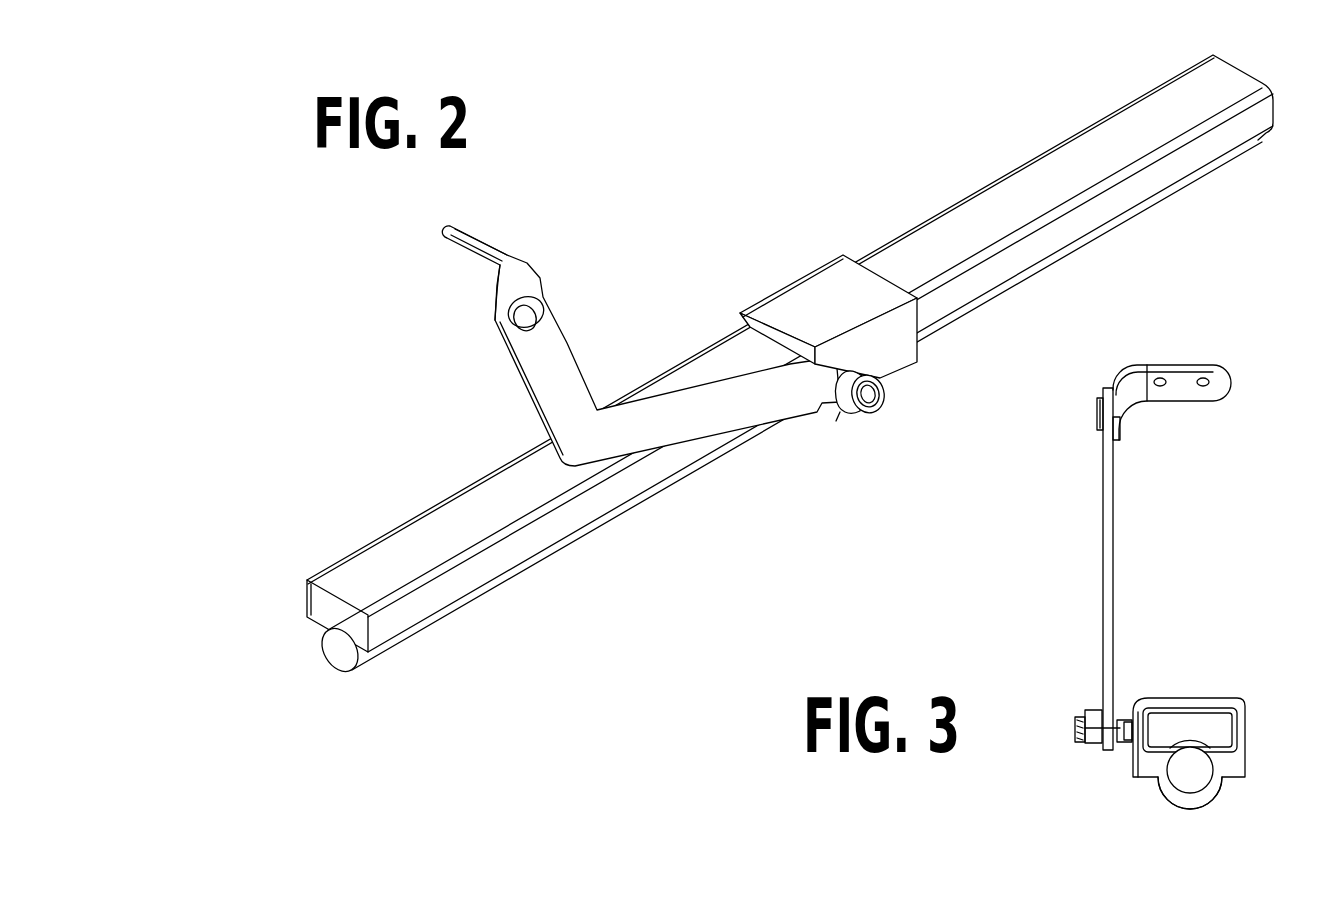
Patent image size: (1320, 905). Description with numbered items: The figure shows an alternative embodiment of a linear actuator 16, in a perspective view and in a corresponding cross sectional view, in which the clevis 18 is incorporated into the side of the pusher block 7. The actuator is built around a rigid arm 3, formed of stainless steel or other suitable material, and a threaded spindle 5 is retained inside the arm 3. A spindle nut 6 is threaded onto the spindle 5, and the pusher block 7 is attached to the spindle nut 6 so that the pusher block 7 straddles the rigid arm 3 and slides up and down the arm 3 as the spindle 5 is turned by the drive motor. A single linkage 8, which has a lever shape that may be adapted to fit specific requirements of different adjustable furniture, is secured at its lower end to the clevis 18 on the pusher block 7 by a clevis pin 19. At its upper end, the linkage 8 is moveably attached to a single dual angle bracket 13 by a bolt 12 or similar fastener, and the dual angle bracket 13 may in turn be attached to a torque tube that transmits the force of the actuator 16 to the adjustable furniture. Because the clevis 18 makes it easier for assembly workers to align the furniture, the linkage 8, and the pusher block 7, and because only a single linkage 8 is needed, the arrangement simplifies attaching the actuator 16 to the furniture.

In FIG. 2, the rigid arm 3 is at (1003, 208).
In FIG. 3, the rigid arm 3 is at (1220, 723).
In FIG. 2, the threaded spindle 5 is at (330, 660).
In FIG. 3, the threaded spindle 5 is at (1182, 782).
In FIG. 3, the spindle nut 6 is at (1216, 782).
In FIG. 2, the pusher block 7 is at (903, 337).
In FIG. 3, the pusher block 7 is at (1190, 700).
In FIG. 2, the linkage 8 is at (557, 355).
In FIG. 3, the linkage 8 is at (1110, 534).
In FIG. 2, the bolt 12 is at (533, 318).
In FIG. 3, the bolt 12 is at (1096, 412).
In FIG. 2, the dual angle bracket 13 is at (488, 247).
In FIG. 3, the dual angle bracket 13 is at (1178, 369).
In FIG. 2, the linear actuator 16 is at (698, 315).
In FIG. 3, the linear actuator 16 is at (1167, 578).
In FIG. 2, the clevis 18 is at (846, 396).
In FIG. 3, the clevis 18 is at (1093, 712).
In FIG. 2, the clevis pin 19 is at (872, 394).
In FIG. 3, the clevis pin 19 is at (1076, 728).